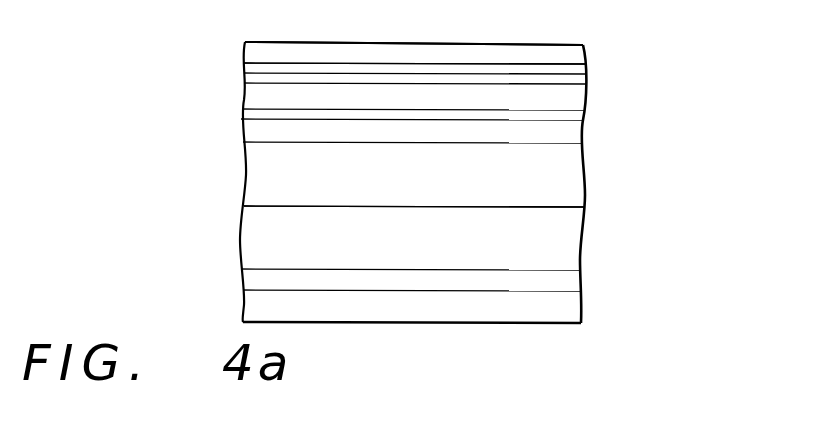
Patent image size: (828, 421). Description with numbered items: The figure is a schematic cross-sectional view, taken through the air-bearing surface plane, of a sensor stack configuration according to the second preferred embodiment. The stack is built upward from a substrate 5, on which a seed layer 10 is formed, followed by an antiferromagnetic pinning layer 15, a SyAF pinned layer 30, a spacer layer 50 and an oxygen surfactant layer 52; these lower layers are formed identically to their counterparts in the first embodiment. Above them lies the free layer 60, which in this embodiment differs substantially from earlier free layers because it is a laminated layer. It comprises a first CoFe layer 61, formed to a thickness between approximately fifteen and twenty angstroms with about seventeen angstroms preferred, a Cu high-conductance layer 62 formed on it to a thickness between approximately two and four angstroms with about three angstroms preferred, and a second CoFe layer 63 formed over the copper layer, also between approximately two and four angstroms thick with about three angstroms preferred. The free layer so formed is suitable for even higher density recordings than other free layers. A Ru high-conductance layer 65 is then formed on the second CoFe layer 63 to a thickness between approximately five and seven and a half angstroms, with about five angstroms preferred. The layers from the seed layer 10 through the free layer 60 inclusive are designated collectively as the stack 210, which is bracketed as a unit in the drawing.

The layers 10–60 collectively 210 is at (173, 62).
The free layer 60 is at (231, 62).
The Ru high-conductance layer 65 is at (568, 54).
The second CoFe layer 63 is at (570, 73).
The Cu high-conductance layer 62 is at (570, 82).
The first CoFe layer 61 is at (563, 99).
The oxygen surfactant layer 52 is at (563, 119).
The spacer layer 50 is at (563, 136).
The SyAF pinned layer 30 is at (231, 140).
The antiferromagnetic pinning layer 15 is at (567, 237).
The seed layer 10 is at (570, 283).
The substrate 5 is at (570, 308).